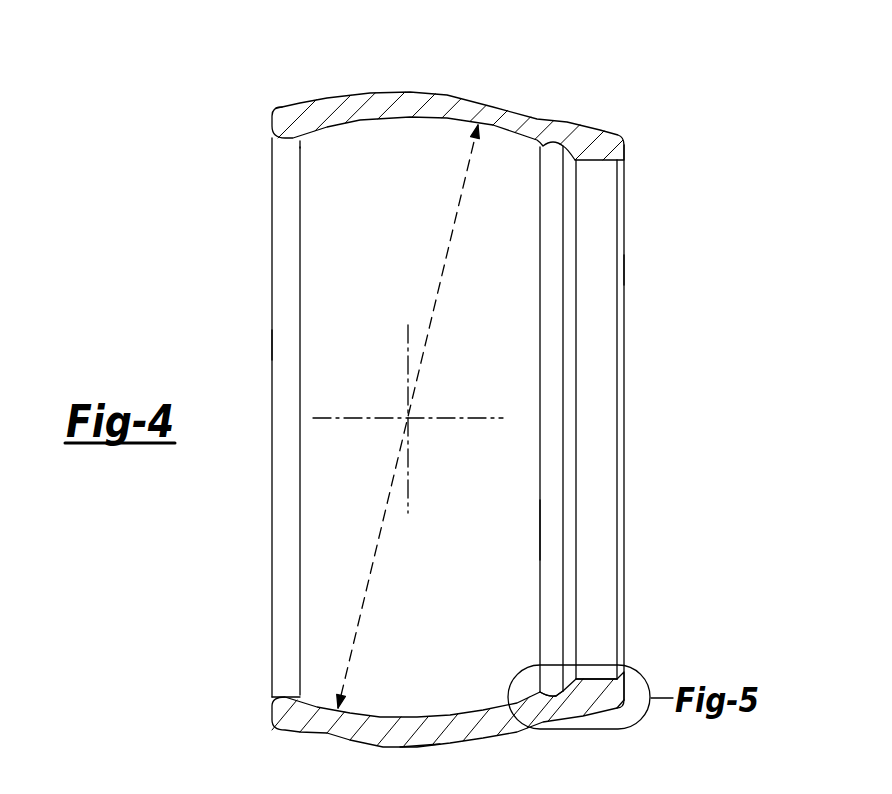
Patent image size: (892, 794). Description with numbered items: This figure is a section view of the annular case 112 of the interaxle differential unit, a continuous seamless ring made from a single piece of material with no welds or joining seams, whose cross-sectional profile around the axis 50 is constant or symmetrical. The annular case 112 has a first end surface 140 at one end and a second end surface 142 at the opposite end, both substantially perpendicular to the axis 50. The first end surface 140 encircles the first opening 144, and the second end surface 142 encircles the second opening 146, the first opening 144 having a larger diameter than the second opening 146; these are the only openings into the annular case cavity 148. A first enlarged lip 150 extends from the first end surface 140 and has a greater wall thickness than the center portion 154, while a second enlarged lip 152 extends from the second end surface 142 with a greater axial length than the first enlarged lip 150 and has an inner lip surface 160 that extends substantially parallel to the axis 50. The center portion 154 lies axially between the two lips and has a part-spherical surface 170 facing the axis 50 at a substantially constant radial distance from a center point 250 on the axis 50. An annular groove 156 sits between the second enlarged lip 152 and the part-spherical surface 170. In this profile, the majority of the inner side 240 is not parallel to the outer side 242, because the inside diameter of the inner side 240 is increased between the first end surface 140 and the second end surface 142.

The axis 50 is at (444, 418).
The annular case 112 is at (274, 108).
The first end surface 140 is at (272, 122).
The second end surface 142 is at (626, 141).
The first opening 144 is at (272, 346).
The second opening 146 is at (625, 270).
The annular case cavity 148 is at (494, 528).
The first enlarged lip 150 is at (283, 693).
The second enlarged lip 152 is at (595, 678).
The center portion 154 is at (550, 92).
The annular groove 156 is at (553, 694).
The inner lip surface 160 is at (633, 747).
The part-spherical surface 170 is at (528, 150).
The inner side 240 is at (382, 716).
The outer side 242 is at (423, 748).
The center point 250 is at (409, 420).